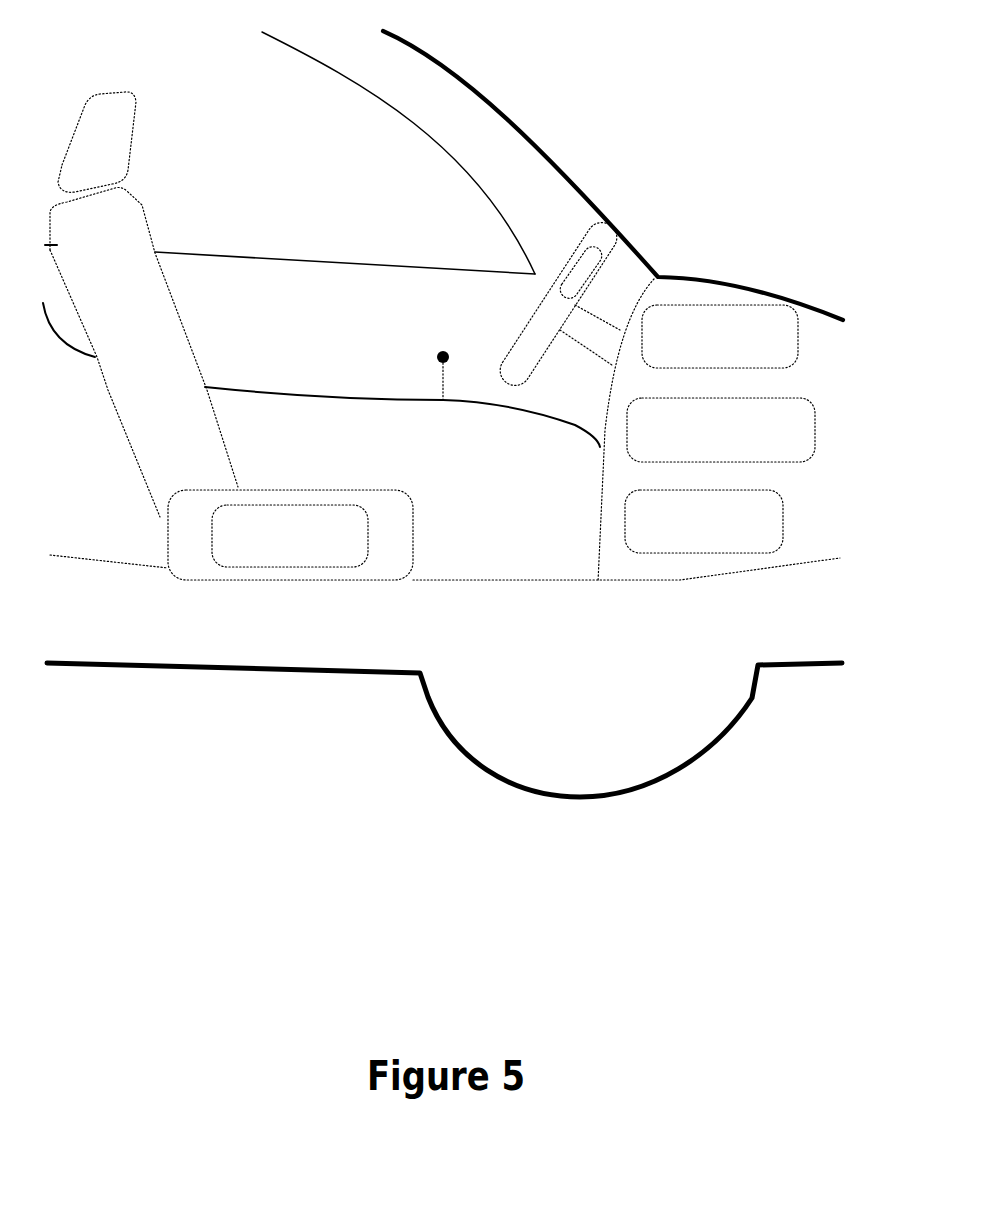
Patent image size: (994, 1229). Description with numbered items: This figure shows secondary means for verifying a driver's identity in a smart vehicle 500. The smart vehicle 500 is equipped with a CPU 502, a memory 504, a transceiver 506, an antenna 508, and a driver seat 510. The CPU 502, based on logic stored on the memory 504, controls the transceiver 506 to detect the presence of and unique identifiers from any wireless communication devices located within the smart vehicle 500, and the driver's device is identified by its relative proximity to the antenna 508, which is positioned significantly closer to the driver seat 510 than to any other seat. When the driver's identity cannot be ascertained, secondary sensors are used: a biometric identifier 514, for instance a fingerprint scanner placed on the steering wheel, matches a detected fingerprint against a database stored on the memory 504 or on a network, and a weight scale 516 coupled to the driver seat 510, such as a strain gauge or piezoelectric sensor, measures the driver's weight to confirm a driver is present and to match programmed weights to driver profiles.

The smart vehicle 500 is at (445, 414).
The CPU 502 is at (445, 430).
The memory 504 is at (720, 506).
The transceiver 506 is at (739, 307).
The antenna 508 is at (374, 361).
The driver seat 510 is at (165, 304).
The biometric identifier 514 is at (613, 291).
The weight scale 516 is at (310, 559).